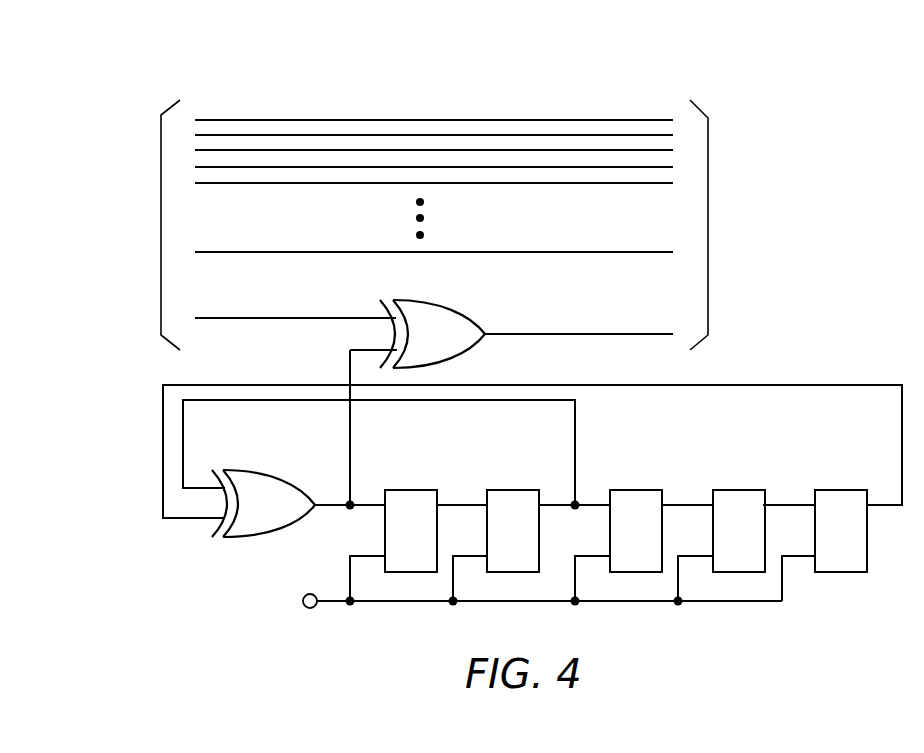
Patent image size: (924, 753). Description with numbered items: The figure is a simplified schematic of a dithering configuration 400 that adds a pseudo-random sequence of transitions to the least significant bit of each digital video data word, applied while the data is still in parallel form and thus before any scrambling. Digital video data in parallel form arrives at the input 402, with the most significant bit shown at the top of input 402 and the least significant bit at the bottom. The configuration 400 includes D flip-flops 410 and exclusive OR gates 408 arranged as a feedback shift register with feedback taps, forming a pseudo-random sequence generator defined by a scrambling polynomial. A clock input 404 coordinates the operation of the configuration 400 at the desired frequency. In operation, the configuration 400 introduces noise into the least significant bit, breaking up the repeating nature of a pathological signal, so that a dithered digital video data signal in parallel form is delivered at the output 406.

The configuration 400 is at (806, 101).
The input 402 is at (161, 178).
The clock input 404 is at (310, 608).
The output 406 is at (709, 175).
The exclusive OR gates 408 is at (458, 320).
The D flip-flops 410 is at (487, 490).